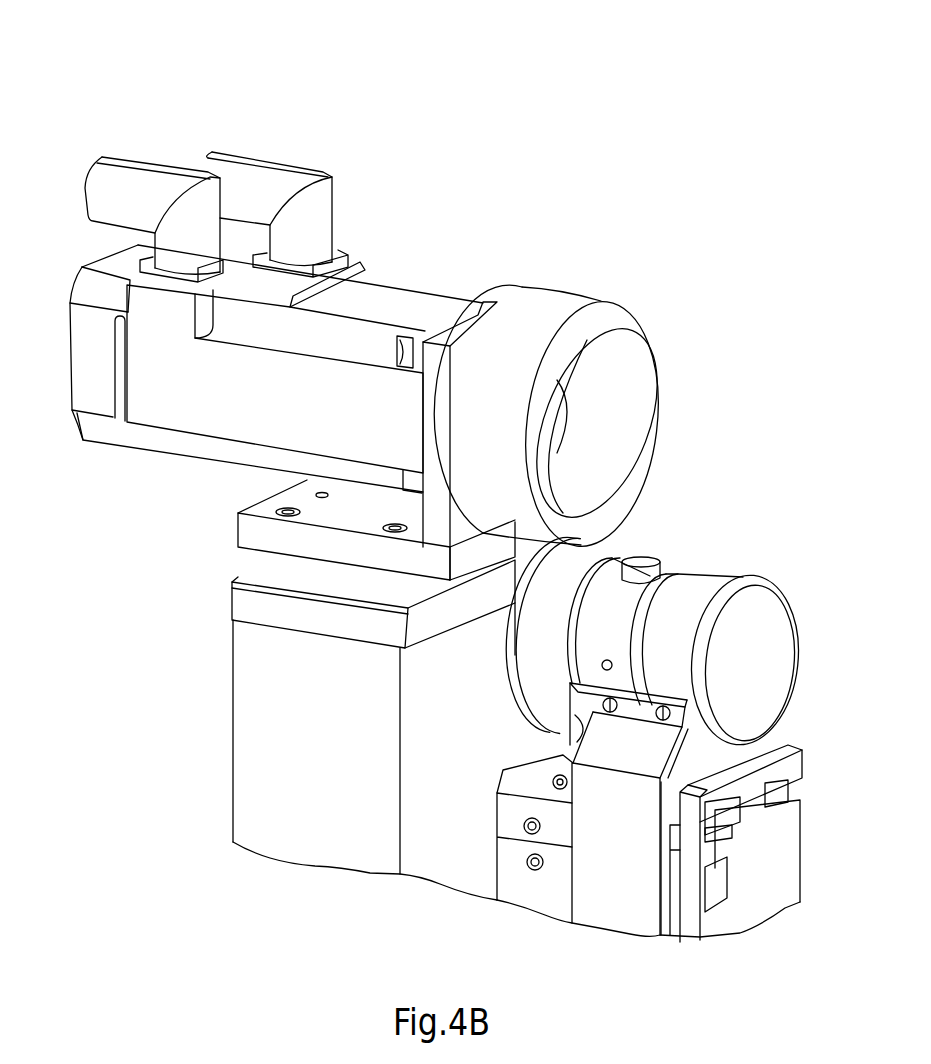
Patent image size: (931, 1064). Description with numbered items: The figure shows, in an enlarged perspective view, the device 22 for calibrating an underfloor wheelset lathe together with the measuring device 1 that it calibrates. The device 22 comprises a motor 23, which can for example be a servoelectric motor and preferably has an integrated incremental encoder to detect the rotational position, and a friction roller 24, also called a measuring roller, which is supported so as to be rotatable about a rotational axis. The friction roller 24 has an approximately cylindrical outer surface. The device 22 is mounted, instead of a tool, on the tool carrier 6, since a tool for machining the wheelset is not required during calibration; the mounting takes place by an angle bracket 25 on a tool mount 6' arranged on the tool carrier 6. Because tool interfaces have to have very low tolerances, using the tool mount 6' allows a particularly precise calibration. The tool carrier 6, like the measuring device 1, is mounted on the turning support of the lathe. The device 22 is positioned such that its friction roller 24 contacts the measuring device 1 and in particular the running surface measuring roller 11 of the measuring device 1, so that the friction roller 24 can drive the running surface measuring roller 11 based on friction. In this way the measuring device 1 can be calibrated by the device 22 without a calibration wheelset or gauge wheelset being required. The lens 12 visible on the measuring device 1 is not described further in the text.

The measuring device 1 is at (730, 498).
The tool carrier 6 is at (341, 751).
The tool mount 6' is at (340, 604).
The running surface measuring roller 11 is at (590, 558).
The lens / optics 12 is at (745, 580).
The device for calibrating an underfloor wheelset lathe 22 is at (322, 105).
The motor 23 is at (247, 408).
The friction roller 24 is at (559, 310).
The angle bracket 25 is at (262, 535).